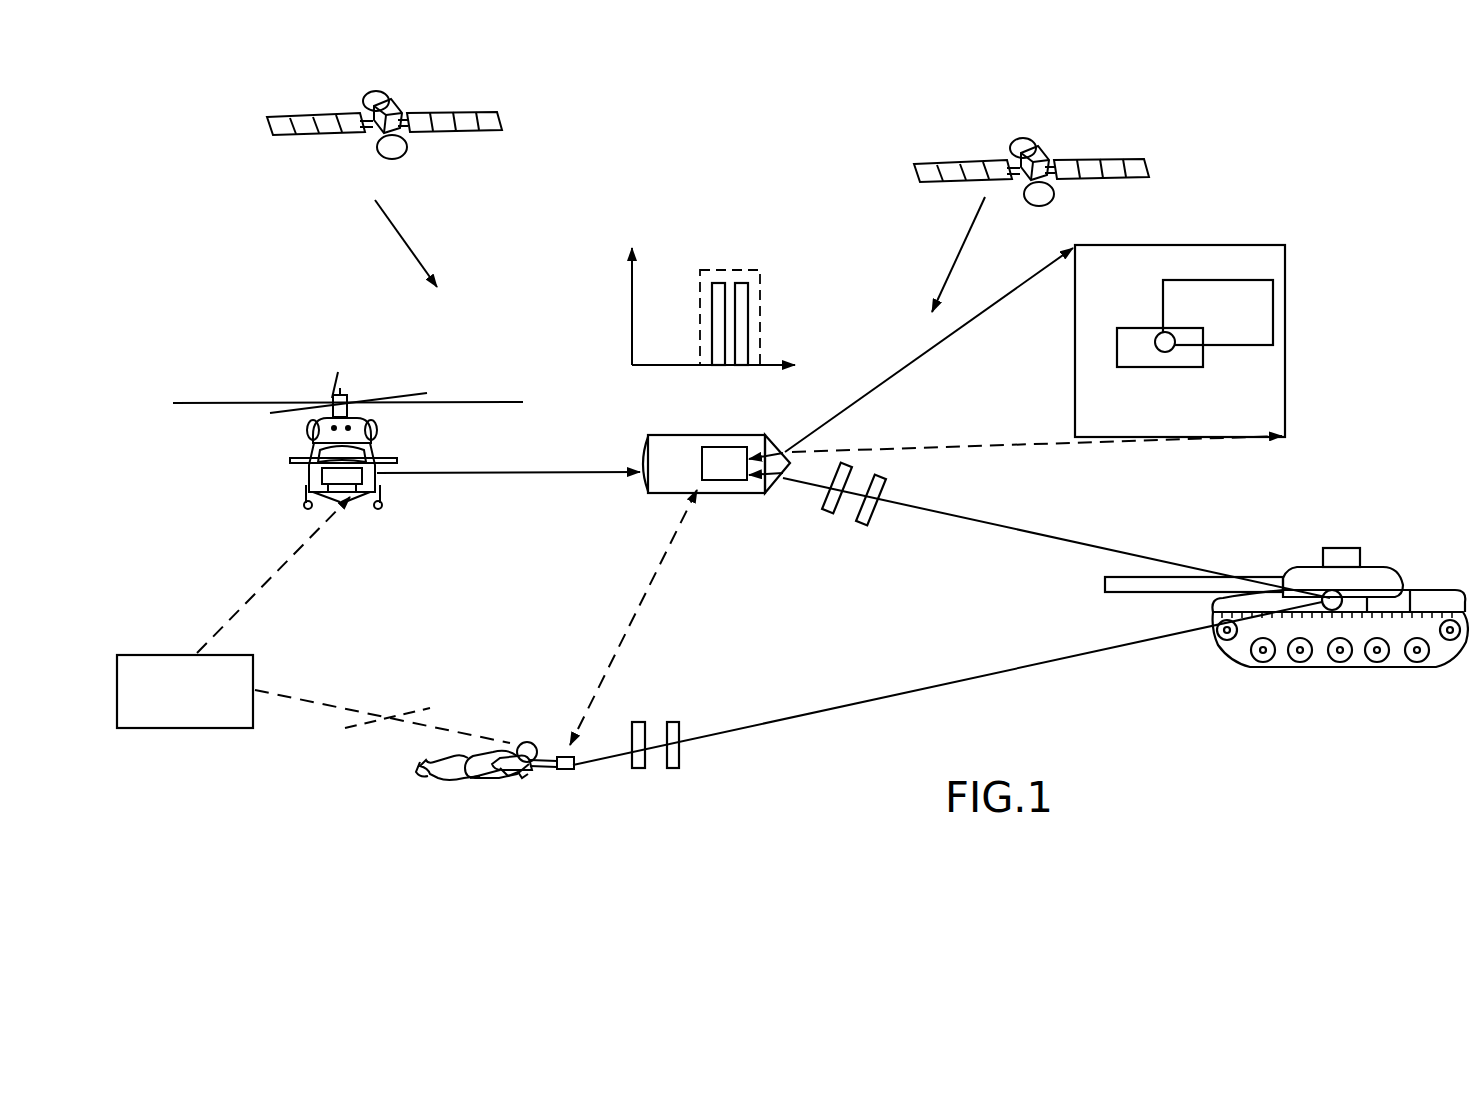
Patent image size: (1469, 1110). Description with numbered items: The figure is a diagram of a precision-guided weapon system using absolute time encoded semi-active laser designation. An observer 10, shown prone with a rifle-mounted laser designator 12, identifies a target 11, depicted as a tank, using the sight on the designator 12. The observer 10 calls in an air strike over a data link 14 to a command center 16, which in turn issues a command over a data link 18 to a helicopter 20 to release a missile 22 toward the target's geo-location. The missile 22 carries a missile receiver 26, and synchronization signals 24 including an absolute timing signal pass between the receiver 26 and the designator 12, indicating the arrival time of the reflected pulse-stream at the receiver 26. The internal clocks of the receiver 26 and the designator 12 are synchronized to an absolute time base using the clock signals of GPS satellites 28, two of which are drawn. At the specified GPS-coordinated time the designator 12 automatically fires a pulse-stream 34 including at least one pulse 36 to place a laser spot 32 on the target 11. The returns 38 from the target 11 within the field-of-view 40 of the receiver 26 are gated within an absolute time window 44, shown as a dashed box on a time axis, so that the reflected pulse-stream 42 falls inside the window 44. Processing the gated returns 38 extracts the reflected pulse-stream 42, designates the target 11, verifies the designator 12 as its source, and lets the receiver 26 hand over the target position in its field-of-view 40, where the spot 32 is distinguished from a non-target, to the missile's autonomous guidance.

The observer 10 is at (480, 782).
The target 11 is at (1272, 557).
The laser designator 12 is at (563, 776).
The data link 14 is at (388, 716).
The command center 16 is at (137, 653).
The data link 18 is at (268, 579).
The helicopter 20 is at (376, 447).
The missile 22 is at (688, 434).
The synchronization signals 24 is at (555, 628).
The missile receiver 26 is at (732, 447).
The GPS satellites 28 is at (380, 94).
The laser spot 32 is at (1162, 357).
The pulse-stream 34 is at (679, 780).
The pulse 36 is at (682, 725).
The returns 38 is at (980, 530).
The field-of-view 40 is at (1259, 245).
The reflected pulse-stream 42 is at (748, 312).
The absolute time window 44 is at (737, 270).